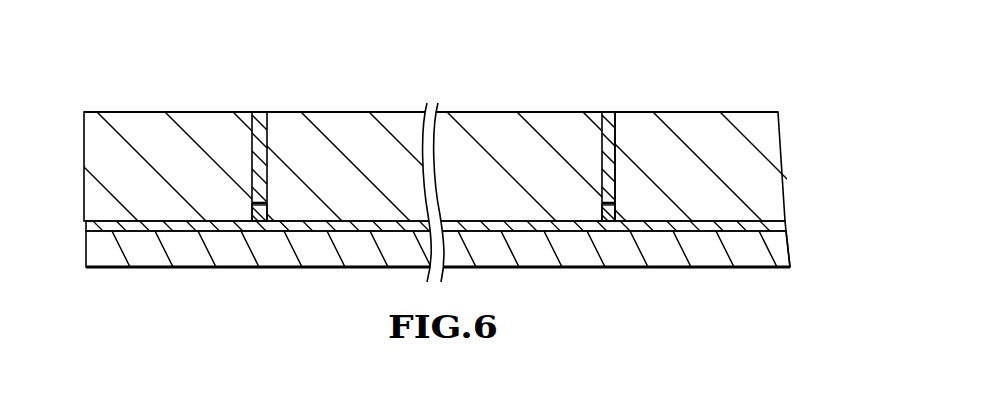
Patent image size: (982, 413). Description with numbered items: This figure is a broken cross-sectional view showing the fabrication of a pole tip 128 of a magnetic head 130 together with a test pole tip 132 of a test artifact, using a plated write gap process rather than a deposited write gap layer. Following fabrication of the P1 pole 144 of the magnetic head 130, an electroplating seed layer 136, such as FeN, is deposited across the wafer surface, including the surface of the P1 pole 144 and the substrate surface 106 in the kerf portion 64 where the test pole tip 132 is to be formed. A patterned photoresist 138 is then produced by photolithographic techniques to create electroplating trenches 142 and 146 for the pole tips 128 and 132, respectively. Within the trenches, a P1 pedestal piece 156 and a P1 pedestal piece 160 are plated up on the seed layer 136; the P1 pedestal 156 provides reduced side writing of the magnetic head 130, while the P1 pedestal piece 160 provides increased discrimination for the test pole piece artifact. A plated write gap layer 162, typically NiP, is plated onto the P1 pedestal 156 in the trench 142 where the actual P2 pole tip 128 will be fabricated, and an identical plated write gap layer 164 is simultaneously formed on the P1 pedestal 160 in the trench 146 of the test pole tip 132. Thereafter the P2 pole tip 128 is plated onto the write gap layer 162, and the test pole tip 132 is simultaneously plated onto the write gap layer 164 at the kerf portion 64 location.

The kerf portion 64 is at (153, 58).
The substrate surface 106 is at (87, 240).
The pole tip 128 is at (618, 112).
The magnetic head 130 is at (609, 90).
The test pole tip 132 is at (269, 112).
The electroplating seed layer 136 is at (86, 226).
The patterned photoresist 138 is at (346, 118).
The electroplating trench 142 is at (605, 112).
The P1 pole 144 is at (788, 244).
The electroplating trench 146 is at (258, 112).
The P1 pedestal piece 156 is at (616, 216).
The P1 pedestal piece 160 is at (267, 216).
The plated write gap layer 162 is at (602, 203).
The plated write gap layer 164 is at (252, 203).